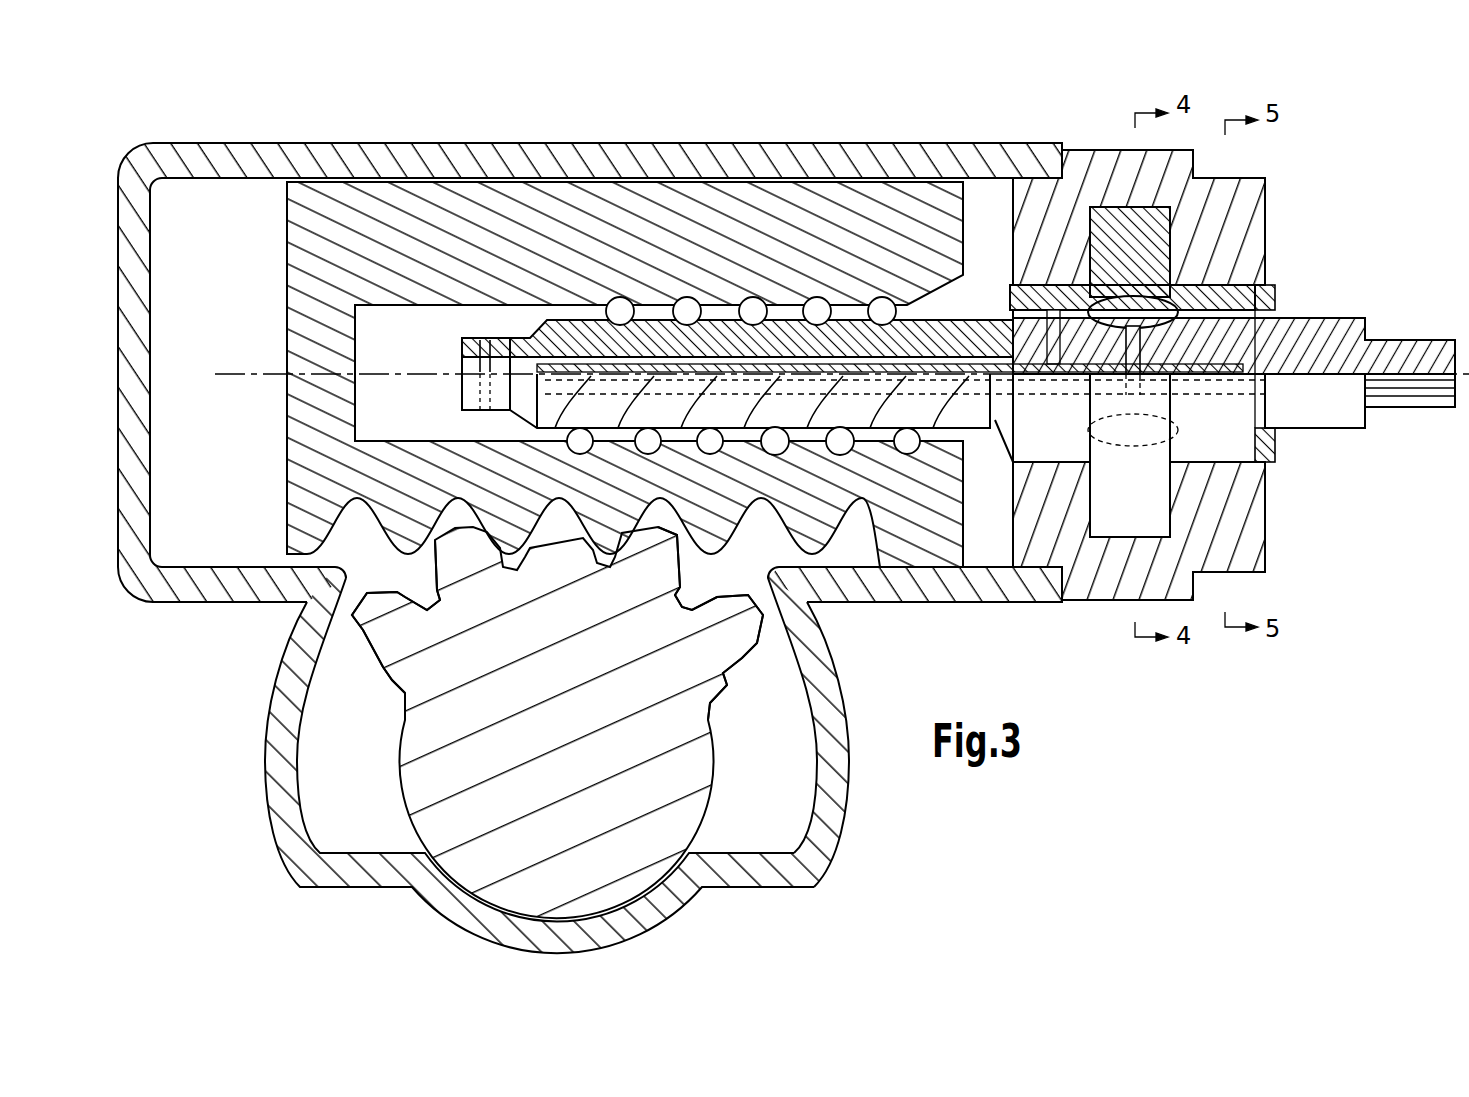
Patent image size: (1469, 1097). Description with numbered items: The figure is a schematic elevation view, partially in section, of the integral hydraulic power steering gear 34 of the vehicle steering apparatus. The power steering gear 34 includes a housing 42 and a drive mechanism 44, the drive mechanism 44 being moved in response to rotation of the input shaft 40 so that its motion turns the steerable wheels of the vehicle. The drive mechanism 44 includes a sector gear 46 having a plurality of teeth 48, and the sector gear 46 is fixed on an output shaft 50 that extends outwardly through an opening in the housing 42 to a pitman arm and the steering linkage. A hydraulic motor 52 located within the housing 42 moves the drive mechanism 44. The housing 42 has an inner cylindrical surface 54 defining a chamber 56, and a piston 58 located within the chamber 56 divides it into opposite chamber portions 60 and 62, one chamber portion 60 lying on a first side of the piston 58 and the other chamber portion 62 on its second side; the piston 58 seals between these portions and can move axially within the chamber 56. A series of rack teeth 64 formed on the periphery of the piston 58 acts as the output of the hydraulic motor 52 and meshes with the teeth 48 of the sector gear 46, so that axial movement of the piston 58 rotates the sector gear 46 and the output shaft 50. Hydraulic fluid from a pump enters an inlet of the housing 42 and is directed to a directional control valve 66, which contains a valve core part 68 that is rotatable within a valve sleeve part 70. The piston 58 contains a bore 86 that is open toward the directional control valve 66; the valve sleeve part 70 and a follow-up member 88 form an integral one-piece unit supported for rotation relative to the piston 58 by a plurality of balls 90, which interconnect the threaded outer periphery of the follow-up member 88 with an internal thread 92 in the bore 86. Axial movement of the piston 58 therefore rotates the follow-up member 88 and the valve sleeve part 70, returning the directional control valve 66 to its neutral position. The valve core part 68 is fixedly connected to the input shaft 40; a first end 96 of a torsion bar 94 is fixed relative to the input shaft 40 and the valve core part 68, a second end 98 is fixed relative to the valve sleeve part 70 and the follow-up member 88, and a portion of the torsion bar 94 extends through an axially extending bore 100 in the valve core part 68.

The power steering gear 34 is at (1338, 160).
The input shaft 40 is at (1443, 422).
The housing 42 is at (1058, 138).
The drive mechanism 44 is at (395, 770).
The sector gear 46 is at (735, 718).
The teeth 48 is at (432, 566).
The output shaft 50 is at (562, 737).
The hydraulic motor 52 is at (222, 528).
The inner cylindrical surface 54 is at (243, 178).
The chamber 56 is at (178, 465).
The piston 58 is at (660, 218).
The chamber portion 60 is at (232, 251).
The chamber portion 62 is at (1003, 524).
The rack teeth 64 is at (818, 572).
The directional control valve 66 is at (1110, 292).
The valve core part 68 is at (1222, 340).
The valve sleeve part 70 is at (1243, 278).
The bore 86 is at (918, 441).
The follow-up member 88 is at (553, 435).
The balls 90 is at (840, 455).
The internal thread 92 is at (600, 300).
The torsion bar 94 is at (838, 350).
The first end 96 is at (1178, 350).
The second end 98 is at (462, 366).
The axially extending bore 100 is at (712, 355).